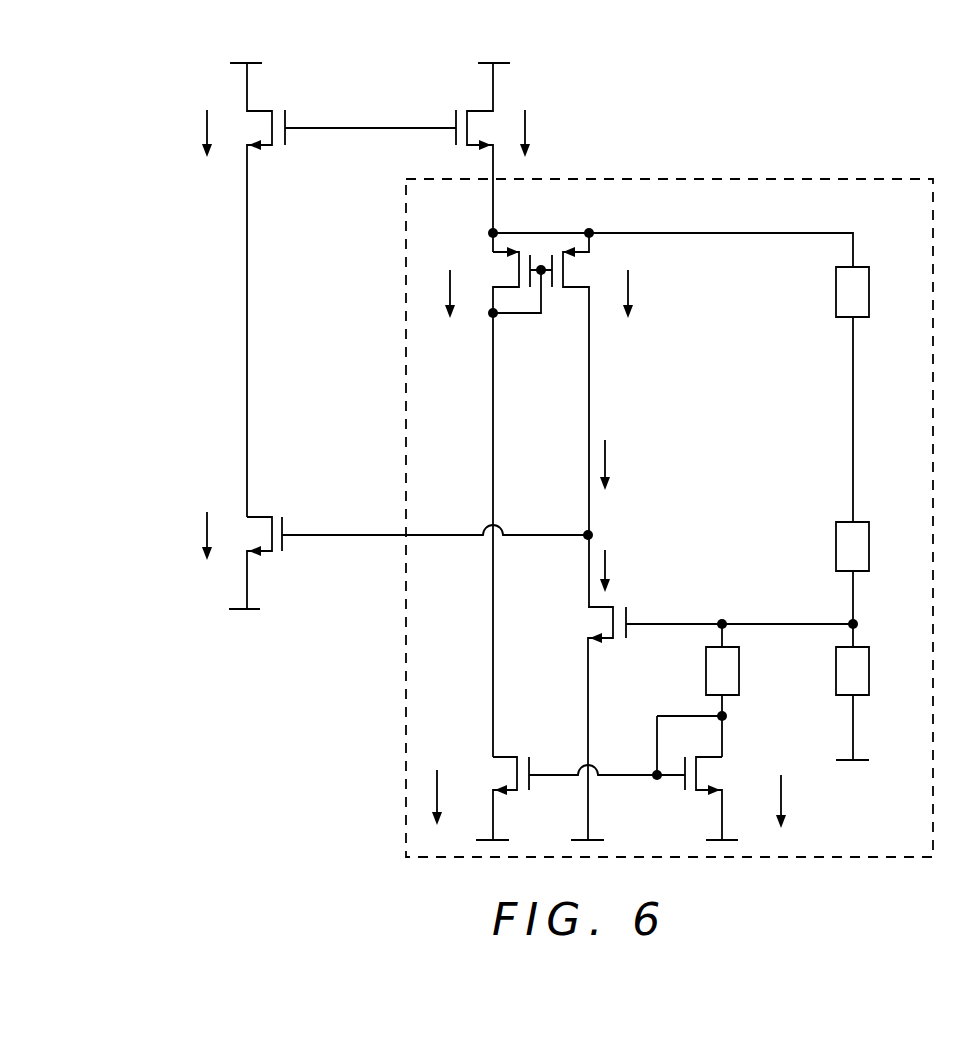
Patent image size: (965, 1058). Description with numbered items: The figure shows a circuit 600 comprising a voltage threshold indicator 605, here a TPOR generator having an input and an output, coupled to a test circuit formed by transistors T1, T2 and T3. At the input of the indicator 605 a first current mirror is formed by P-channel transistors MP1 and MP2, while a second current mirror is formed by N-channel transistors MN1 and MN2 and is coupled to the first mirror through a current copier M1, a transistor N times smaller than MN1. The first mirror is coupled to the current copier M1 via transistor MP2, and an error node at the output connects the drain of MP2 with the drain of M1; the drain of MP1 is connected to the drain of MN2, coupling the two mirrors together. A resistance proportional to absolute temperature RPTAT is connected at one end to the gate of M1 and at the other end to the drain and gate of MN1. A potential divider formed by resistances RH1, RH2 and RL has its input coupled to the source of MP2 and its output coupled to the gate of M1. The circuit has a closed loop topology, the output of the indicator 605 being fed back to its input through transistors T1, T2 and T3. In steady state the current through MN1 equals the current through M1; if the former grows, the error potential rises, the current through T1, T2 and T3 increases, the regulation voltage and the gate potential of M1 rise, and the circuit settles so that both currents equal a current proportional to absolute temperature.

The voltage regulator circuit 600 is at (158, 684).
The voltage threshold indicator 605 is at (838, 179).
The transistor T1 is at (342, 290).
The transistor T2 is at (483, 157).
The transistor T3 is at (408, 563).
The P-channel transistor MP1 is at (511, 502).
The P-channel transistor MP2 is at (578, 420).
The current copier M1 is at (702, 723).
The N-channel transistor MN1 is at (720, 798).
The N-channel transistor MN2 is at (569, 798).
The resistance RH1 is at (876, 394).
The resistance RH2 is at (876, 573).
The resistance RL is at (868, 692).
The resistance proportional to absolute temperature RPTAT is at (731, 699).